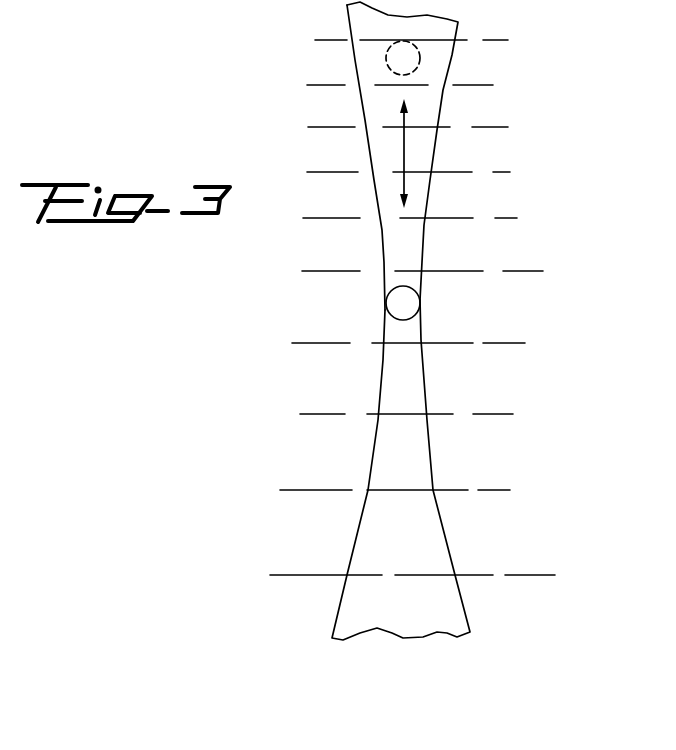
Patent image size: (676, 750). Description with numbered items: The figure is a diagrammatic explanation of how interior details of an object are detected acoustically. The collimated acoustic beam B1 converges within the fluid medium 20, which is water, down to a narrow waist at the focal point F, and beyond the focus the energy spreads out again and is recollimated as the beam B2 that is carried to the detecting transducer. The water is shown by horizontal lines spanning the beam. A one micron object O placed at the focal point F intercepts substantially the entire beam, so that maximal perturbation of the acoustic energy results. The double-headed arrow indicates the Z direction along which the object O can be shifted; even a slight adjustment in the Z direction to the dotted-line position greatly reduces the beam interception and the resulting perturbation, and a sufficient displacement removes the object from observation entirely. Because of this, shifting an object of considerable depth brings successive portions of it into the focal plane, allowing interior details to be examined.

The fluid medium 20 is at (510, 490).
The collimated acoustic beam B1 is at (381, 192).
The recollimated acoustic beam B2 is at (432, 449).
The object O is at (421, 58).
The focal point F is at (421, 303).
The Z direction Z is at (405, 148).